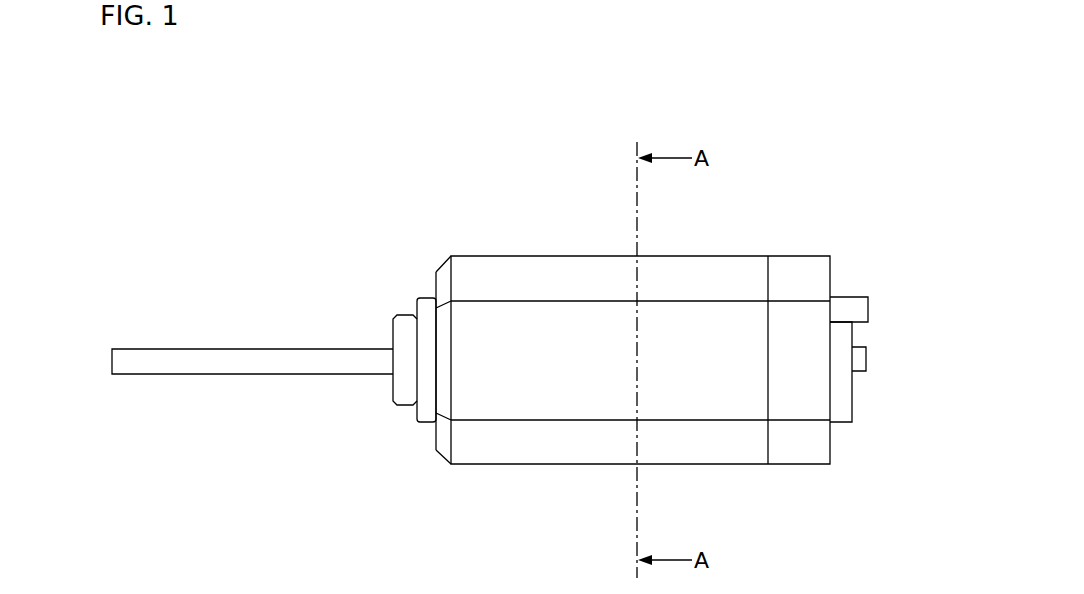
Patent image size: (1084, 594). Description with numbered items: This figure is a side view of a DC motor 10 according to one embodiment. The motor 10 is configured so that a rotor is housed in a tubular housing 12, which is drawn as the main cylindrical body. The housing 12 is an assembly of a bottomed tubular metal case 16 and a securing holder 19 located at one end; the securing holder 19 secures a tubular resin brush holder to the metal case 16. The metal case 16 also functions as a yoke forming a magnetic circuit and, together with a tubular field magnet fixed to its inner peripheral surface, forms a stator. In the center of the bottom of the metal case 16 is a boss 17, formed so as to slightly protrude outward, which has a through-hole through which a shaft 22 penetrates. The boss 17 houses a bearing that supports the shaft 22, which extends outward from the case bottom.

The DC motor 10 is at (671, 135).
The housing 12 is at (712, 255).
The metal case 16 is at (543, 256).
The boss 17 is at (423, 423).
The securing holder 19 is at (798, 255).
The shaft 22 is at (253, 348).